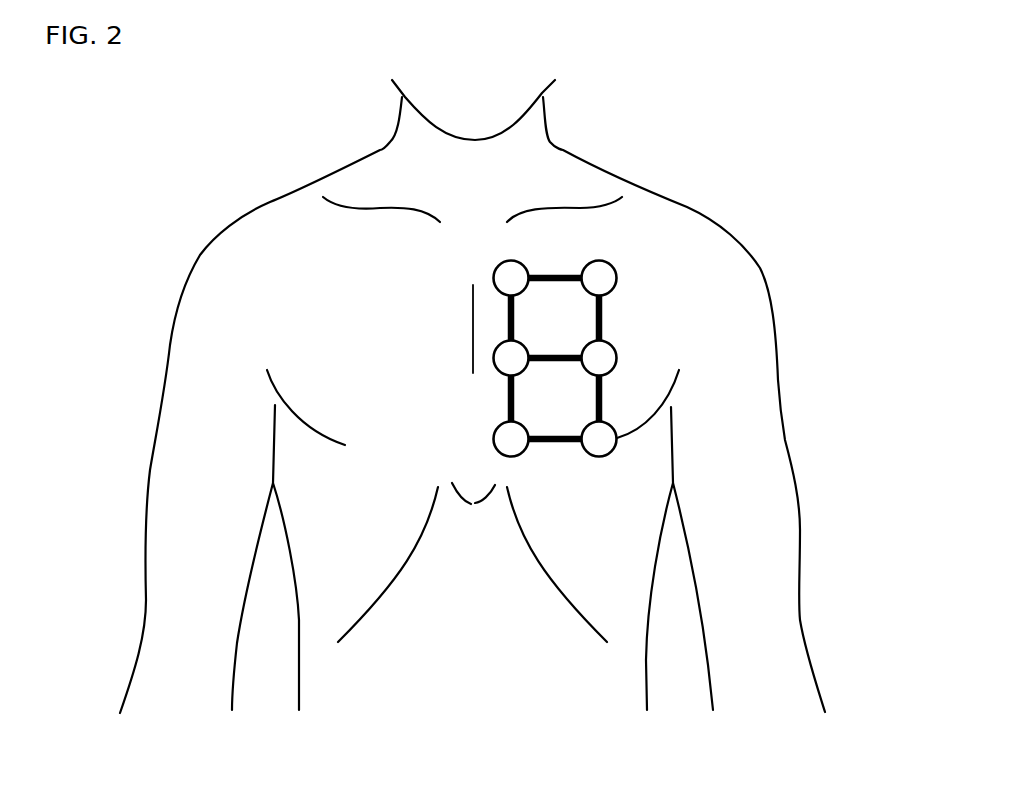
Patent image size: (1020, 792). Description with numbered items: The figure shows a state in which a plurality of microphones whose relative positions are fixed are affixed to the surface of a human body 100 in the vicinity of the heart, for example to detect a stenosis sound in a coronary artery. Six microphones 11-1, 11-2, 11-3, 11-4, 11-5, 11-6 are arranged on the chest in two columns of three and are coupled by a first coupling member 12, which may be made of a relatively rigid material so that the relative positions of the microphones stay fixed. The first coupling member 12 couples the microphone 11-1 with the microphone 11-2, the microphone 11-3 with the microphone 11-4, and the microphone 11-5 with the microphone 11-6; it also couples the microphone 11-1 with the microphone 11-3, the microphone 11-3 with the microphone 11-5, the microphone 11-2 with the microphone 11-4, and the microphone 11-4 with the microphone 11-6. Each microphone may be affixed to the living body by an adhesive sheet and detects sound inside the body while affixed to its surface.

The human body 100 is at (288, 192).
The first coupling member 12 is at (557, 275).
The microphone 11-1 is at (497, 266).
The microphone 11-2 is at (613, 269).
The microphone 11-3 is at (497, 364).
The microphone 11-4 is at (613, 350).
The microphone 11-5 is at (496, 431).
The microphone 11-6 is at (603, 457).